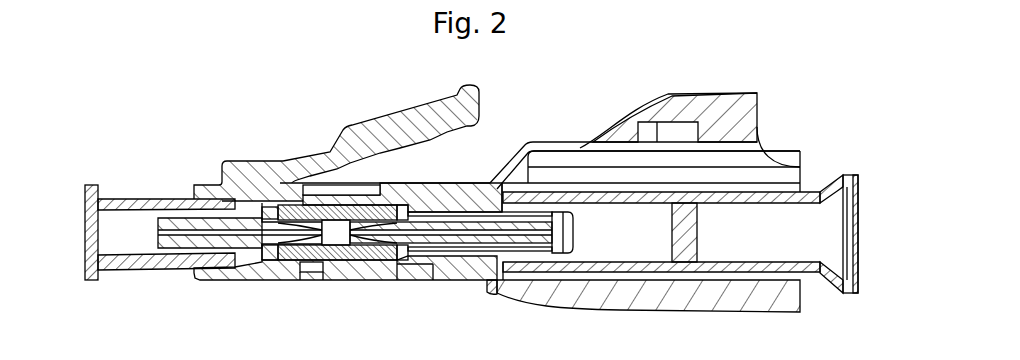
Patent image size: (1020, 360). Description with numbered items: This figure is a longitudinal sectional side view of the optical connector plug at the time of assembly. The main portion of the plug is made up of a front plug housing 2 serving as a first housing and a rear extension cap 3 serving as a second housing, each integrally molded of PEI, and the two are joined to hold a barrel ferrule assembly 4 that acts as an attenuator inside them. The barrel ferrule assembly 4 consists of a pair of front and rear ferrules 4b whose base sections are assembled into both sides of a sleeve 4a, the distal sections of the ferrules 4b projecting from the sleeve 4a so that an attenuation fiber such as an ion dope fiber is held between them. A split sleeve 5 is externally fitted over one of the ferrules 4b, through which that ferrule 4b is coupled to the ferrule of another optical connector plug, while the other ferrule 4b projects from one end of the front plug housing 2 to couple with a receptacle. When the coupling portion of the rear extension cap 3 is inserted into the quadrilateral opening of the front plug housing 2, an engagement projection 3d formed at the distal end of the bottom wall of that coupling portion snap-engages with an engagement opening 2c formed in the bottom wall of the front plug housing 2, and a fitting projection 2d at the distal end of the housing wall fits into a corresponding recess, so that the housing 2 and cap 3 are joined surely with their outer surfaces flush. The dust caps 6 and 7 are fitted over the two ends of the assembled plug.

The front plug housing 2 is at (262, 160).
The engagement opening 2c is at (318, 281).
The fitting projection 2d is at (397, 279).
The rear extension cap 3 is at (678, 101).
The engagement projection 3d is at (318, 273).
The barrel ferrule assembly 4 is at (355, 262).
The sleeve 4a is at (287, 261).
The ferrule 4b is at (182, 242).
The split sleeve 5 is at (494, 293).
The dust cap 6 is at (141, 198).
The dust cap 7 is at (833, 178).